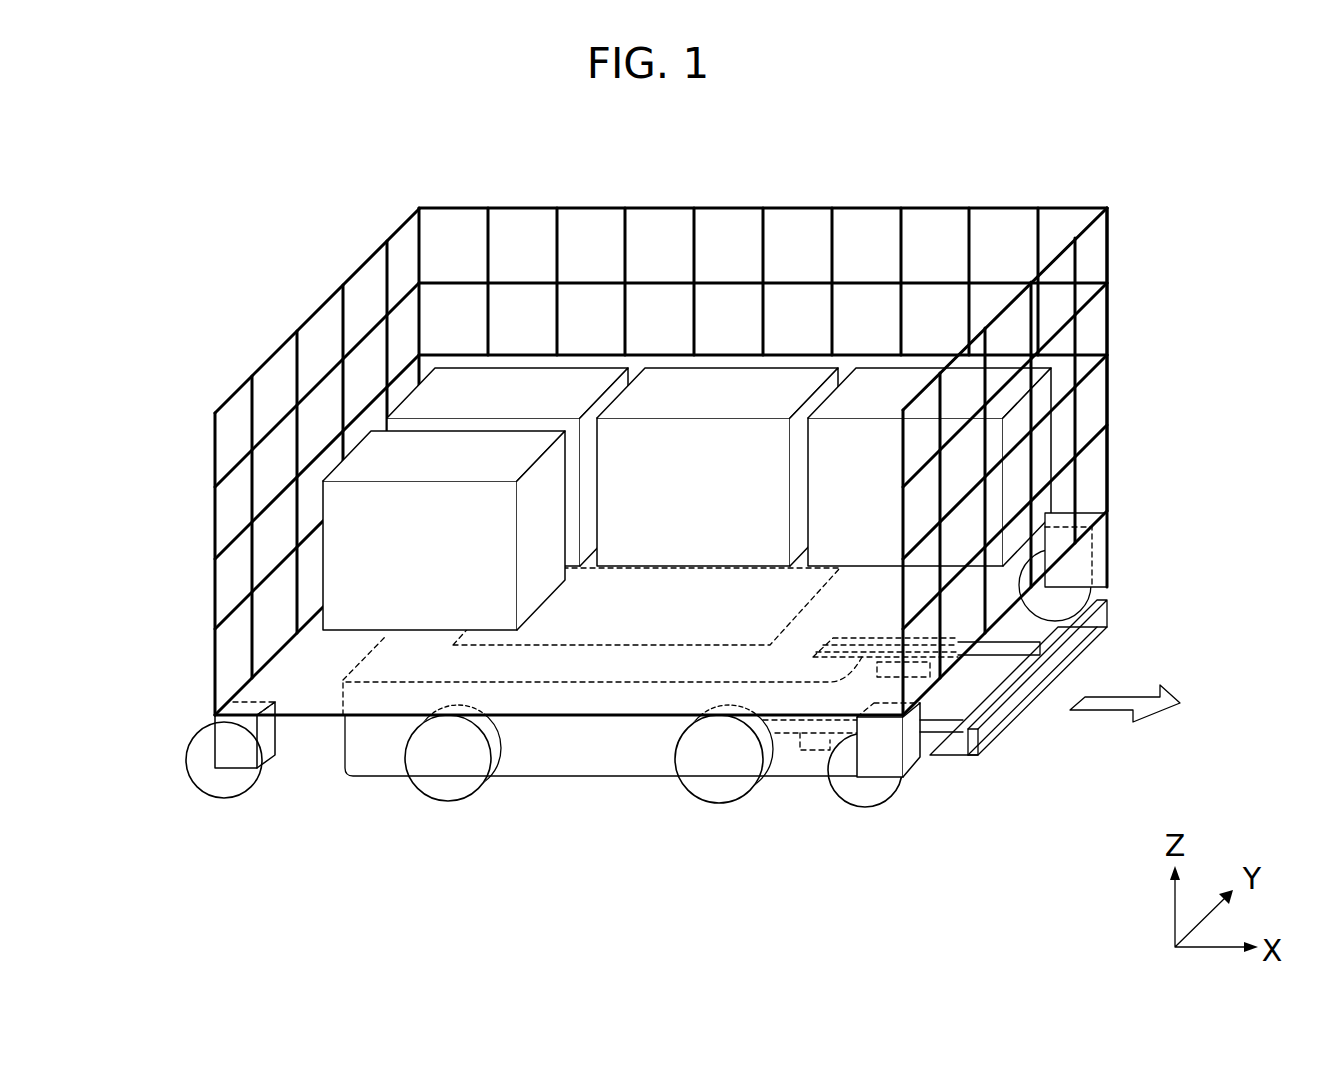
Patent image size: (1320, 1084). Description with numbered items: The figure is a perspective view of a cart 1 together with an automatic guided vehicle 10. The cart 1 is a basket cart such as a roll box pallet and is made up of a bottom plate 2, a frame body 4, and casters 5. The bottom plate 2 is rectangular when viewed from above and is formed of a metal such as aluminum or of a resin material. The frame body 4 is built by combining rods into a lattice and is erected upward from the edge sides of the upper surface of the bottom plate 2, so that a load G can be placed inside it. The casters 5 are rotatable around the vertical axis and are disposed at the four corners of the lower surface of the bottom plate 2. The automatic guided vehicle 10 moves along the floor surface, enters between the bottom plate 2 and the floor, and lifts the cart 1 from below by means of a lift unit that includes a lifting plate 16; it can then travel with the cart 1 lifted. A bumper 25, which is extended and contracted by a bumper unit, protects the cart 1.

The cart 1 is at (355, 252).
The load G is at (580, 383).
The frame body 4 is at (213, 449).
The bottom plate 2 is at (298, 666).
The caster 5 is at (188, 745).
The lifting plate 16 is at (586, 645).
The automatic guided vehicle 10 is at (650, 796).
The bumper 25 is at (987, 735).